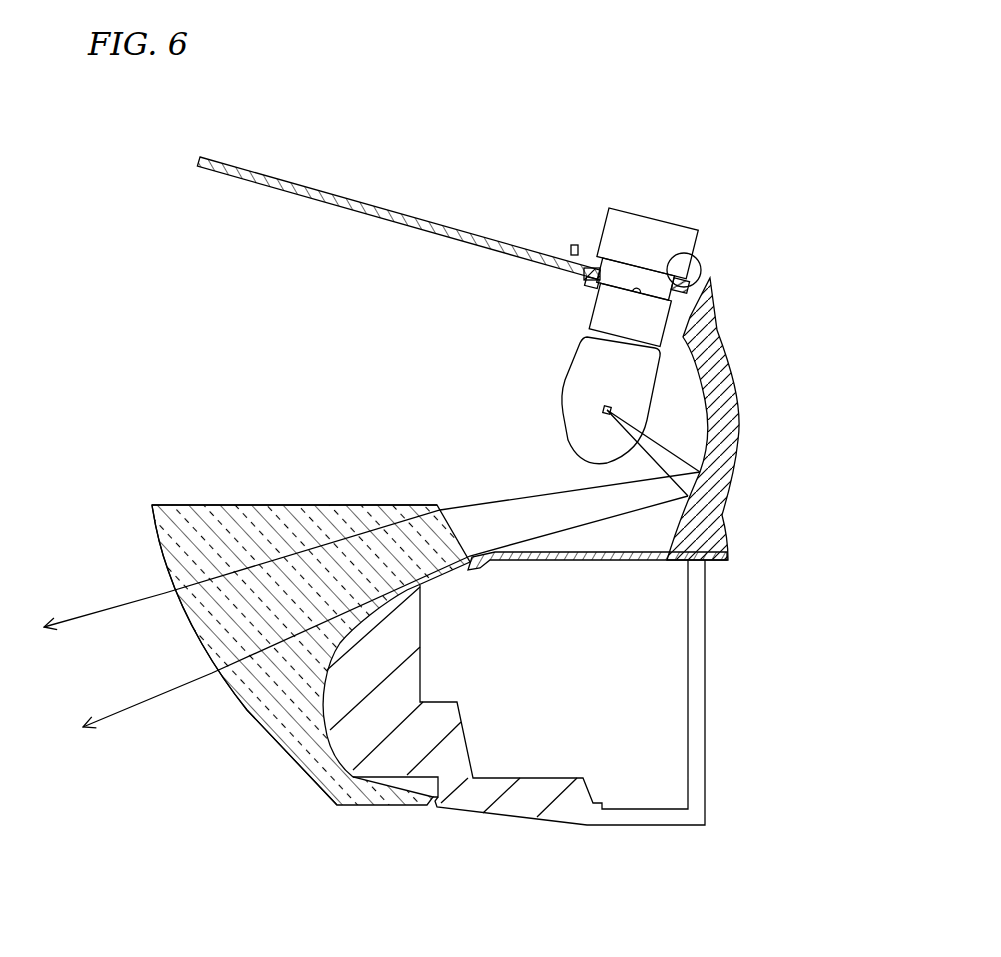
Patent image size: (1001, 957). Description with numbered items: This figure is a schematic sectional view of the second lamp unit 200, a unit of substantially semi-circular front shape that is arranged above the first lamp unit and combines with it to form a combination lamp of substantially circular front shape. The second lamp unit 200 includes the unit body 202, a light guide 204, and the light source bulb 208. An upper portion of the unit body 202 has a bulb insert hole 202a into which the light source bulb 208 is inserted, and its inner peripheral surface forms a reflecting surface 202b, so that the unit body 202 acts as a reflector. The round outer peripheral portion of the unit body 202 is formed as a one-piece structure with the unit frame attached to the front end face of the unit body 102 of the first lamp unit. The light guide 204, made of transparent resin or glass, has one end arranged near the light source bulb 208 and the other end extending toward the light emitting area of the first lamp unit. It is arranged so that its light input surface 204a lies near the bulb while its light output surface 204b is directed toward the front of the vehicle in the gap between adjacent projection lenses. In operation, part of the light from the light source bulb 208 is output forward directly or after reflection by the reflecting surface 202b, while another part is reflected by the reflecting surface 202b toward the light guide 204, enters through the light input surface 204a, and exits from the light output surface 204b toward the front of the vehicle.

The second lamp unit 200 is at (781, 168).
The unit body 202 is at (213, 158).
The bulb insert hole 202a is at (701, 255).
The reflecting surface 202b is at (722, 440).
The light source bulb 208 is at (574, 384).
The light guide 204 is at (238, 703).
The light input surface 204a is at (433, 505).
The light output surface 204b is at (155, 536).
The unit body 102 is at (478, 815).